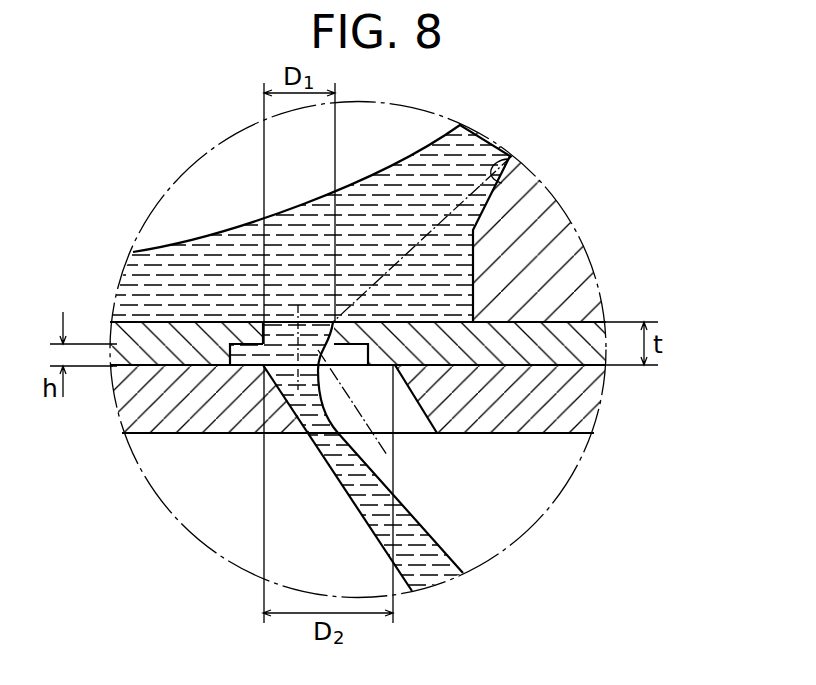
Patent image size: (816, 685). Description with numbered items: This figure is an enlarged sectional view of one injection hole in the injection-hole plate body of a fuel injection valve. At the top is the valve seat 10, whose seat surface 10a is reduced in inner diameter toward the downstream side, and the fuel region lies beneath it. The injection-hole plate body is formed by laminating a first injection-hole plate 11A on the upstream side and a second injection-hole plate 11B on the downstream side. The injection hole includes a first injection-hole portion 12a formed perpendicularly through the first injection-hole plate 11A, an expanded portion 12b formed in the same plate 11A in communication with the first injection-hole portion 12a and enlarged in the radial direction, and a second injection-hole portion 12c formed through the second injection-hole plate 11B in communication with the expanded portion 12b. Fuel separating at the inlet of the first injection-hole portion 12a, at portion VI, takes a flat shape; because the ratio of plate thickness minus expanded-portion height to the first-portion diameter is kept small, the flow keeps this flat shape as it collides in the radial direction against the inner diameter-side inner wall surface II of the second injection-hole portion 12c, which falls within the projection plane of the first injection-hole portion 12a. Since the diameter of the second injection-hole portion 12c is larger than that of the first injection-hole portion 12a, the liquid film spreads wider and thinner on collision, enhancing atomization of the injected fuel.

The valve seat 10 is at (528, 215).
The seat surface 10a is at (510, 157).
The first injection-hole plate 11A is at (570, 340).
The second injection-hole plate 11B is at (580, 405).
The first injection-hole portion 12a is at (283, 327).
The expanded portion 12b is at (355, 355).
The second injection-hole portion 12c is at (400, 423).
The portion VI is at (330, 343).
The inner diameter-side inner wall surface II is at (353, 507).